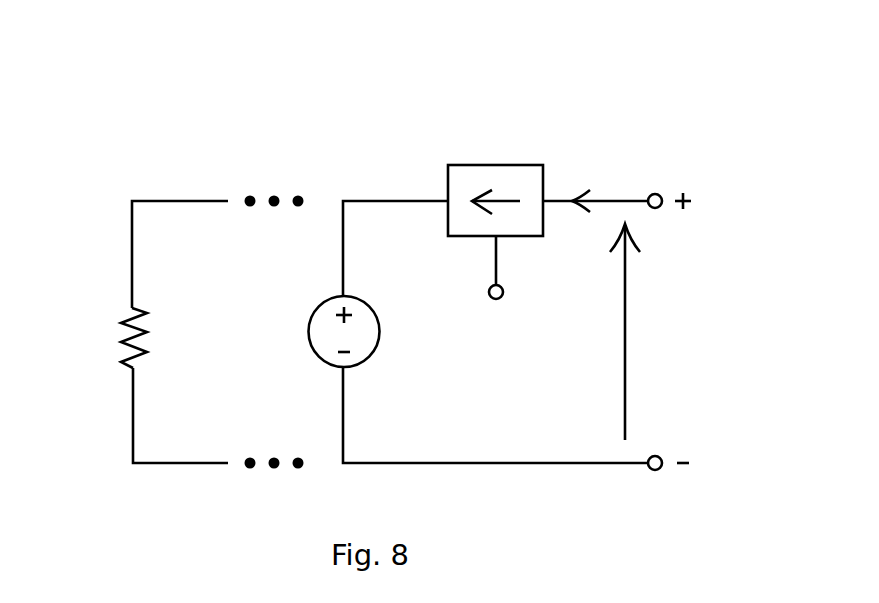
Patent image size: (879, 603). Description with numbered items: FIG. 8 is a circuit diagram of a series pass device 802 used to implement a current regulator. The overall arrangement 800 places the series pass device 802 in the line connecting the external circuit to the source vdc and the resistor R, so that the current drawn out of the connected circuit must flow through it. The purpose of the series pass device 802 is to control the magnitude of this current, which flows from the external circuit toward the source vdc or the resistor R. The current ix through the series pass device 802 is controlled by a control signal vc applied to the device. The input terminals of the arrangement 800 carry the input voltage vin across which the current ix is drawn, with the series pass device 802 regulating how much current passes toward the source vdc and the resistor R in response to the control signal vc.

The voltage regulator circuit 800 is at (428, 249).
The series pass device 802 is at (545, 165).
The resistor R is at (110, 338).
The source vdc is at (314, 331).
The control signal vc is at (495, 296).
The input voltage vin is at (647, 332).
The current ix is at (585, 174).